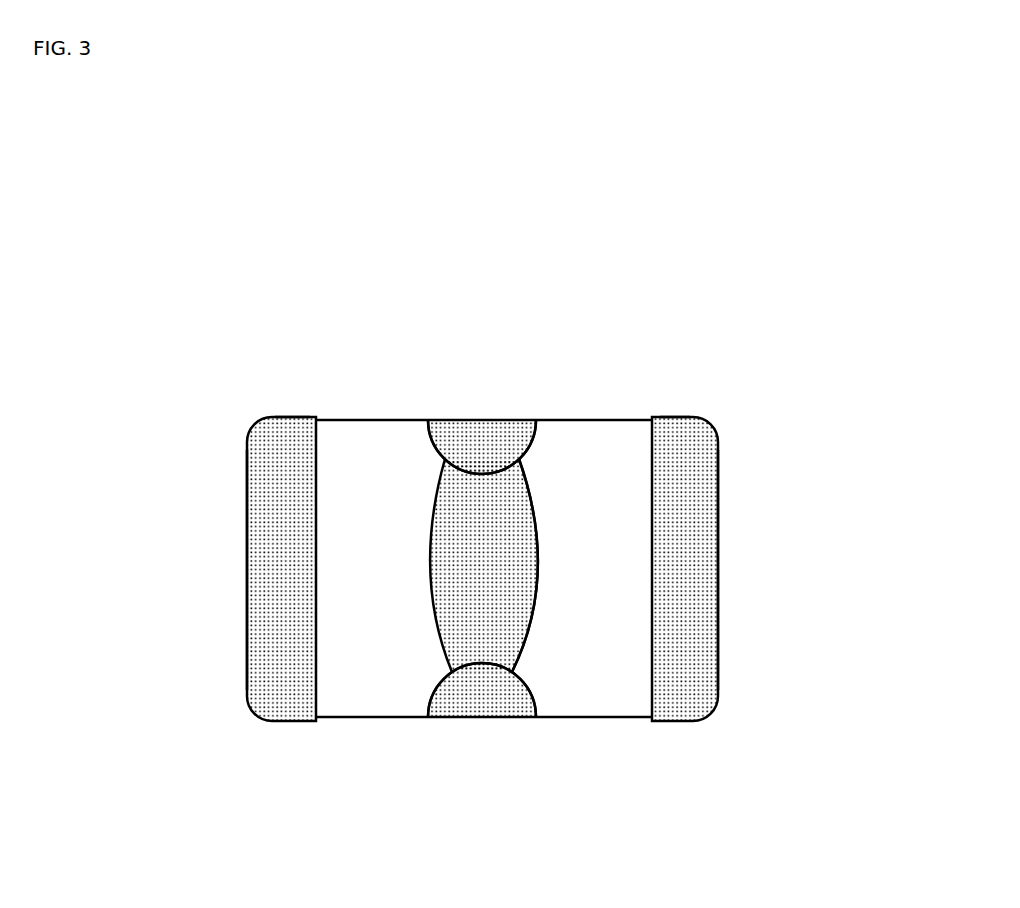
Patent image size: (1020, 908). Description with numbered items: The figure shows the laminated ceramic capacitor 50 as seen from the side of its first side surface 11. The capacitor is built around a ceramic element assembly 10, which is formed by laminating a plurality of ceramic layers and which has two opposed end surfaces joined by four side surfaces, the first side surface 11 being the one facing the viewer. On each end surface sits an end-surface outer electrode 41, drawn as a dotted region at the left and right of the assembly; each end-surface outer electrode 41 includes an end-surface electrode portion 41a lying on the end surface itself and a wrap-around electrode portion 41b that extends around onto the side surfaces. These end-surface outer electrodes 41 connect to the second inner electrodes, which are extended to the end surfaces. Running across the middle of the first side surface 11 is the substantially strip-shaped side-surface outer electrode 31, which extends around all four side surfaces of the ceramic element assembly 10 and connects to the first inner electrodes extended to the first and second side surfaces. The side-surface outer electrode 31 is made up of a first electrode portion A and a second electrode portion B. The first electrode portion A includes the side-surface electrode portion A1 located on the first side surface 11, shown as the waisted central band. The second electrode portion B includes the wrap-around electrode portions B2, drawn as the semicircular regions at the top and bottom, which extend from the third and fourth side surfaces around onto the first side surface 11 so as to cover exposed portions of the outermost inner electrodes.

The ceramic element assembly 10 is at (393, 406).
The first side surface 11 is at (352, 672).
The side-surface outer electrode 31 is at (522, 570).
The end-surface outer electrode 41 is at (247, 593).
The end-surface electrode portion 41a is at (291, 417).
The wrap-around electrode portion 41b is at (690, 417).
The laminated ceramic capacitor 50 is at (650, 345).
The first electrode portion A is at (538, 607).
The side-surface electrode portion A1 is at (540, 538).
The second electrode portion B is at (527, 412).
The wrap-around electrode portion B2 is at (490, 437).